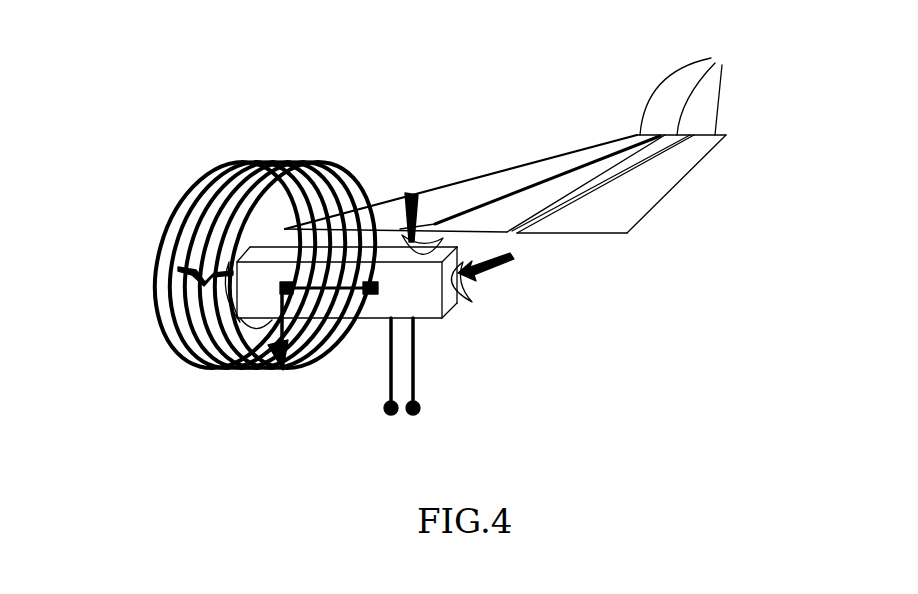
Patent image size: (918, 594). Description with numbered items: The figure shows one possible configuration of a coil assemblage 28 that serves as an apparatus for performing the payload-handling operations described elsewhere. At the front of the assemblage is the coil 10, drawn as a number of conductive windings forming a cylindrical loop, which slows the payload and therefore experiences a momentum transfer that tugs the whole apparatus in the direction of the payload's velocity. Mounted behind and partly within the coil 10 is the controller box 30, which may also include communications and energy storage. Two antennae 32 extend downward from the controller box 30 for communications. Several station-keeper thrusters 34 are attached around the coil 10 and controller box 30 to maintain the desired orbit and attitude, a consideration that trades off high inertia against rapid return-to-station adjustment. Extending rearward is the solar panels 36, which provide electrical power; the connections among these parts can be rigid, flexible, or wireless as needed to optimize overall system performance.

The coil 10 is at (258, 165).
The coil assemblage 28 is at (468, 112).
The controller box 30 is at (445, 318).
The antennae 32 is at (392, 416).
The station-keeper thrusters 34 is at (150, 267).
The solar panels 36 is at (689, 85).